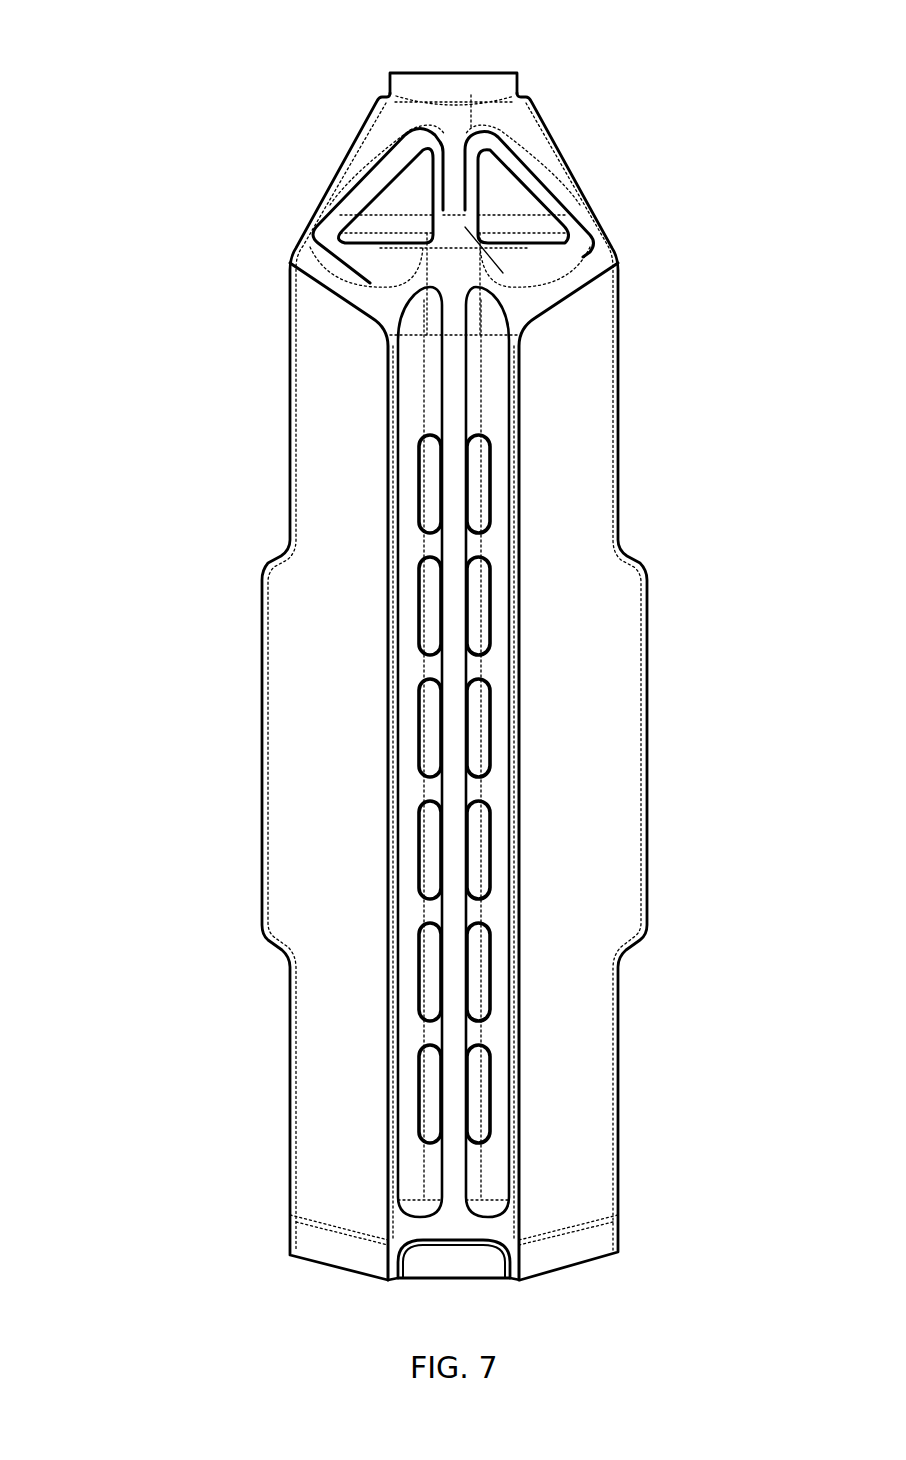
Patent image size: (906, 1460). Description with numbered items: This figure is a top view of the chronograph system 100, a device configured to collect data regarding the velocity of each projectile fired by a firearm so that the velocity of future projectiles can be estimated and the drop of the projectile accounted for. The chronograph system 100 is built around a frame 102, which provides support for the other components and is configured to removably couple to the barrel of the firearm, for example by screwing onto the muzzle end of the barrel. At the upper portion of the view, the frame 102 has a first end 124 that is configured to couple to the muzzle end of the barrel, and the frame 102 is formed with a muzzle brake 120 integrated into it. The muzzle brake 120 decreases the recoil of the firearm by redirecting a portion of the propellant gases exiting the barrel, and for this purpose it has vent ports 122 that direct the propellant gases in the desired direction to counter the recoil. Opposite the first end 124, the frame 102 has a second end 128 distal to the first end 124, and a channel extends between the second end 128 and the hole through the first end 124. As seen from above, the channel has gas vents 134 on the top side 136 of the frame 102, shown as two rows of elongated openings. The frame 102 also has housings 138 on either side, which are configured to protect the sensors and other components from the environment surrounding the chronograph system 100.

The chronograph system 100 is at (168, 50).
The frame 102 is at (513, 347).
The muzzle brake 120 is at (325, 195).
The vent port 122 is at (527, 203).
The first end 124 is at (516, 72).
The second end 128 is at (392, 1282).
The gas vents 134 is at (480, 849).
The top side 136 is at (455, 1163).
The housing 138 is at (318, 427).